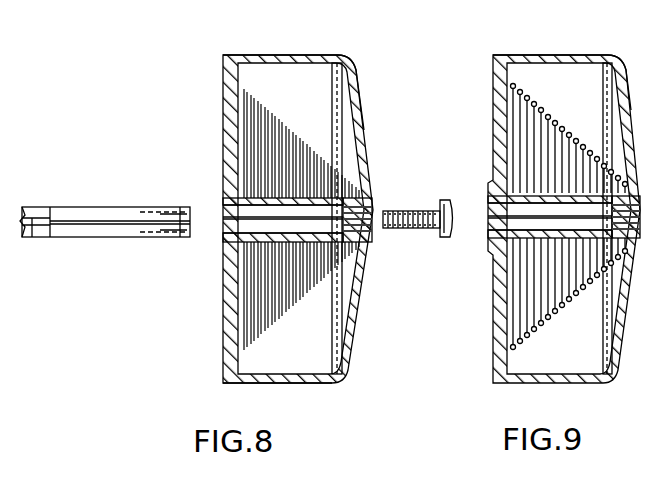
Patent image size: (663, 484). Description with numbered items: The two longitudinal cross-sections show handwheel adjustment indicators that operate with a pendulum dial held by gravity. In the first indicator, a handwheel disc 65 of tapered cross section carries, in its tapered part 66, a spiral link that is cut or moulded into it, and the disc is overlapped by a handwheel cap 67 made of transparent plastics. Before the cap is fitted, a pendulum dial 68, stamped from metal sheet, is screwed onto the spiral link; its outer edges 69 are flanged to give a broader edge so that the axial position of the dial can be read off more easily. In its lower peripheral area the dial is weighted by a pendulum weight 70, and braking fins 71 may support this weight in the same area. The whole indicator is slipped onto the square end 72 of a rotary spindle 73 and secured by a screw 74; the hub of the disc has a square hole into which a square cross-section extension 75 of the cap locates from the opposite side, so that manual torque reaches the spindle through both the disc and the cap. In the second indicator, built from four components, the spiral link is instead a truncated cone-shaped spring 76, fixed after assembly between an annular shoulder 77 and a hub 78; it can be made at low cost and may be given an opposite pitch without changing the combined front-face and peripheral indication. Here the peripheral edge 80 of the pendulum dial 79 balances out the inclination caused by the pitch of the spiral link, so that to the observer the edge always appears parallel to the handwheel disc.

In FIG. 8, the handwheel disc 65 is at (223, 133).
In FIG. 8, the tapered part 66 is at (243, 108).
In FIG. 8, the handwheel cap 67 is at (281, 54).
In FIG. 8, the pendulum dial 68 is at (342, 117).
In FIG. 8, the outer edges 69 is at (318, 54).
In FIG. 8, the pendulum weight 70 is at (350, 378).
In FIG. 8, the braking fins 71 is at (330, 320).
In FIG. 8, the square end 72 is at (115, 238).
In FIG. 8, the rotary spindle 73 is at (40, 238).
In FIG. 8, the screw 74 is at (418, 230).
In FIG. 8, the square cross-section extension 75 is at (372, 236).
In FIG. 9, the truncated cone-shaped spring 76 is at (537, 110).
In FIG. 9, the annular shoulder 77 is at (512, 86).
In FIG. 9, the hub 78 is at (513, 257).
In FIG. 9, the pendulum dial 79 is at (598, 110).
In FIG. 9, the peripheral edge 80 is at (613, 53).